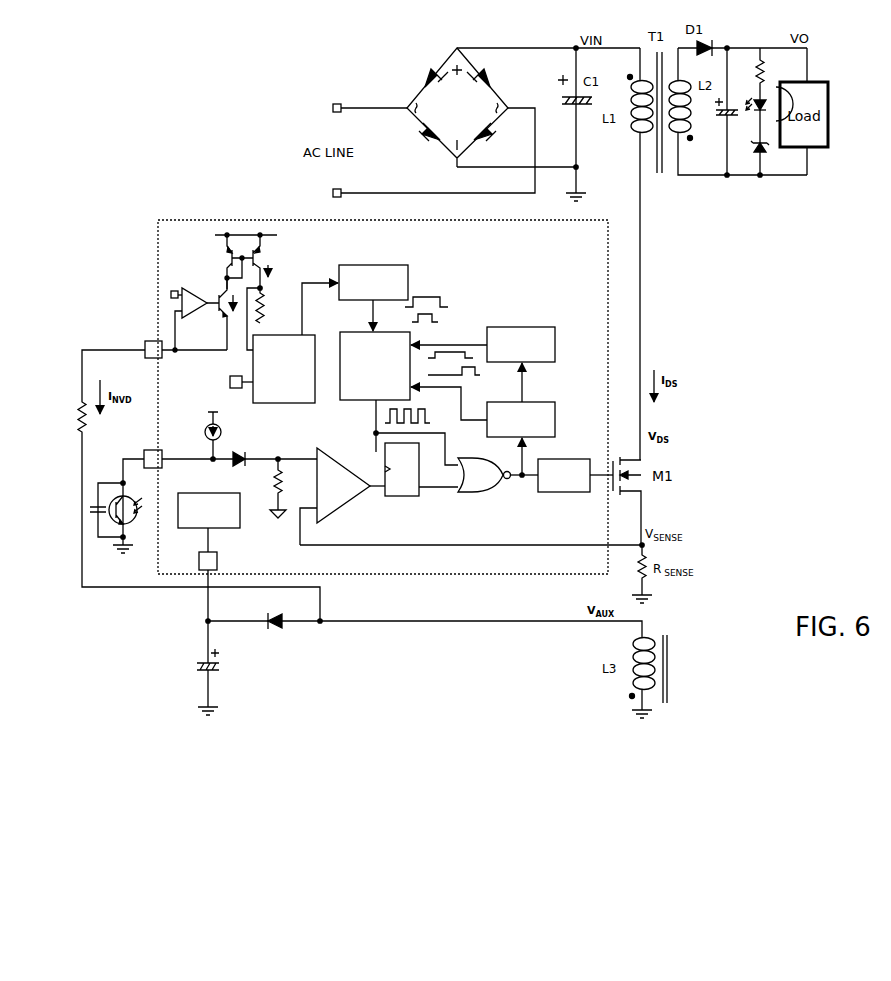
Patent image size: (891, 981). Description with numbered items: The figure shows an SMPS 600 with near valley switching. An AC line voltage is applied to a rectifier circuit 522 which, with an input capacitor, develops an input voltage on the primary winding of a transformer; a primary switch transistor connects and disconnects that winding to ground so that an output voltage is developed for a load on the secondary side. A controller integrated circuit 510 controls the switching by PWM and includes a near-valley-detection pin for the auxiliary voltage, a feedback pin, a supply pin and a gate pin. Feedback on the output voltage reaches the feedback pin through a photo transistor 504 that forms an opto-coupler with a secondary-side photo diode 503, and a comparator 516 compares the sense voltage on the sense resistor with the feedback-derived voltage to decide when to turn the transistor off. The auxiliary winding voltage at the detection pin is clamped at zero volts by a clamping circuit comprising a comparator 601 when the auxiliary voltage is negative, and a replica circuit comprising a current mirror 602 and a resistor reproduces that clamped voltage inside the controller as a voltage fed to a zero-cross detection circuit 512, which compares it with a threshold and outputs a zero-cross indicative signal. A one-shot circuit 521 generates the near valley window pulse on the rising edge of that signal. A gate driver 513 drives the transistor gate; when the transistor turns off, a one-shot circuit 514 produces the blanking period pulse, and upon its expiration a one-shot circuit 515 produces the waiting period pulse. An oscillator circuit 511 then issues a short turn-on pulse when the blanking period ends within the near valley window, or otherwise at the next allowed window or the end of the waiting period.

The SMPS 600 is at (101, 171).
The controller integrated circuit 510 is at (229, 219).
The rectifier circuit 522 is at (404, 78).
The photo diode 503 is at (771, 111).
The current mirror 602 is at (286, 261).
The comparator 601 is at (199, 311).
The zero-cross detection circuit 512 is at (284, 369).
The one-shot circuit 521 is at (389, 265).
The oscillator circuit 511 is at (375, 366).
The one-shot circuit 515 is at (540, 327).
The one-shot circuit 514 is at (541, 402).
The comparator 516 is at (340, 508).
The gate driver 513 is at (563, 494).
The photo transistor 504 is at (138, 524).